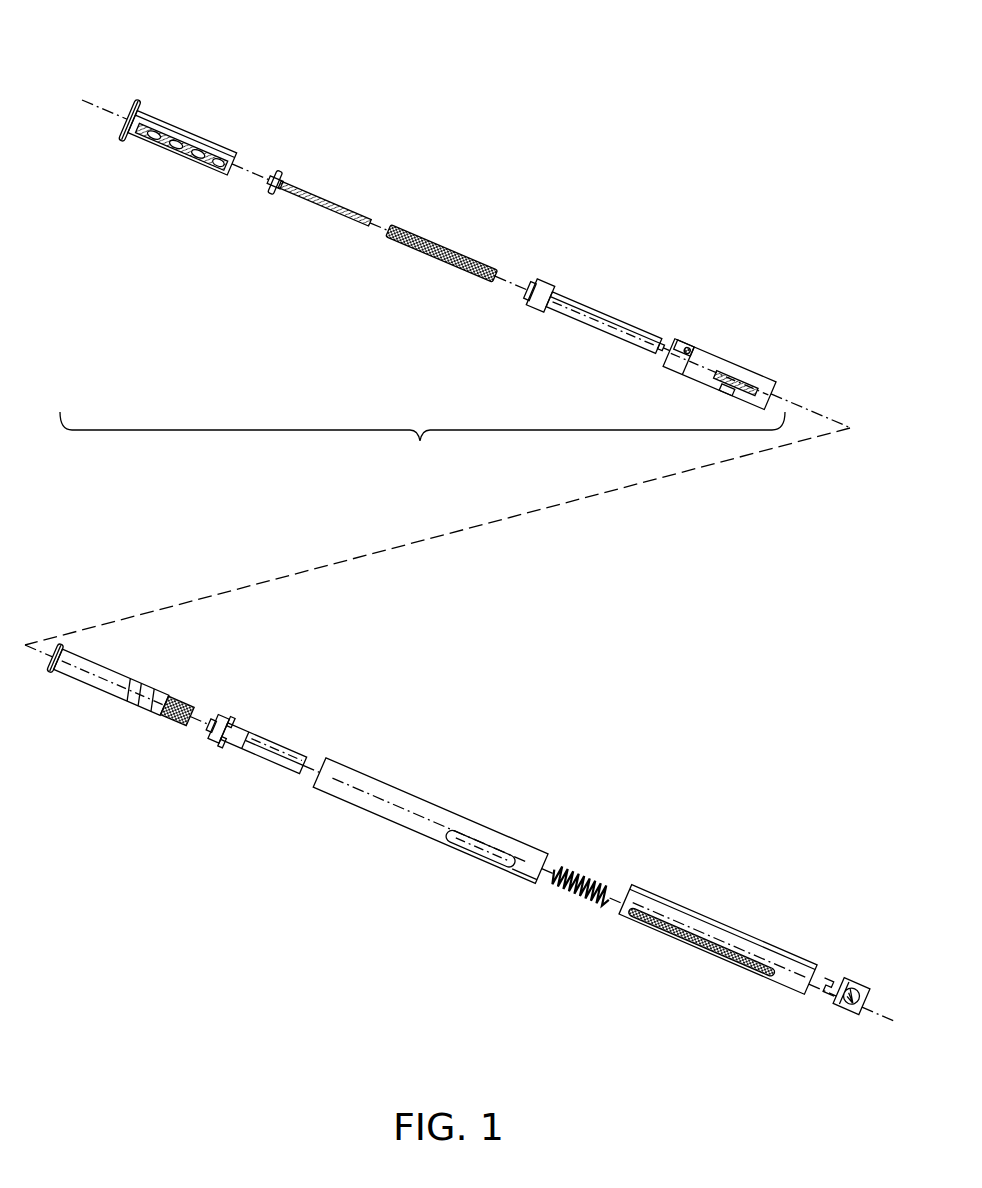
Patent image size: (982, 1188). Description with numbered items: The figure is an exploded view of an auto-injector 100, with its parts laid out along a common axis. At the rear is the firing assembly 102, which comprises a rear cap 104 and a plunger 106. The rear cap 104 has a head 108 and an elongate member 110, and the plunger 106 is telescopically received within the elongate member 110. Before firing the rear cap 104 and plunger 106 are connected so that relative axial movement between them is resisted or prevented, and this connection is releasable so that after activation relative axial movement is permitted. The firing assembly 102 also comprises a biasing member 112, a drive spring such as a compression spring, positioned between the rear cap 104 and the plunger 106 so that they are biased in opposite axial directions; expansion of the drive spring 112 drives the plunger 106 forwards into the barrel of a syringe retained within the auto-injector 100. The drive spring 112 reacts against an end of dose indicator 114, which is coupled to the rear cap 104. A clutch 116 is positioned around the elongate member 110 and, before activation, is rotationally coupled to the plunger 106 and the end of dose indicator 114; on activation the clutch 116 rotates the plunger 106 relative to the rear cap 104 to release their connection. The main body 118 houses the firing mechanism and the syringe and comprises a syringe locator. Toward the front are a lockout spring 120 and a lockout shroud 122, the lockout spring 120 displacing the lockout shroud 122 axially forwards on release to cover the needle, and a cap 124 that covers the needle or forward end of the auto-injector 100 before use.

The auto-injector 100 is at (627, 159).
The firing assembly 102 is at (422, 445).
The rear cap 104 is at (197, 123).
The plunger 106 is at (568, 309).
The head 108 is at (133, 100).
The elongate member 110 is at (152, 146).
The biasing member 112 is at (432, 256).
The end of dose indicator 114 is at (290, 199).
The clutch 116 is at (728, 345).
The main body 118 is at (413, 797).
The lockout spring 120 is at (565, 862).
The lockout shroud 122 is at (715, 918).
The cap 124 is at (850, 975).